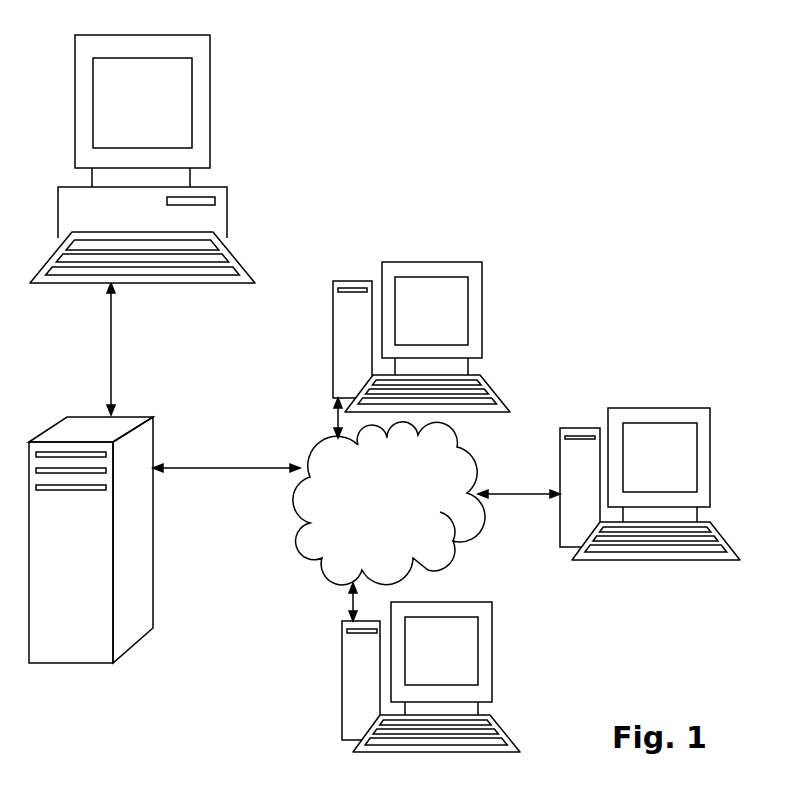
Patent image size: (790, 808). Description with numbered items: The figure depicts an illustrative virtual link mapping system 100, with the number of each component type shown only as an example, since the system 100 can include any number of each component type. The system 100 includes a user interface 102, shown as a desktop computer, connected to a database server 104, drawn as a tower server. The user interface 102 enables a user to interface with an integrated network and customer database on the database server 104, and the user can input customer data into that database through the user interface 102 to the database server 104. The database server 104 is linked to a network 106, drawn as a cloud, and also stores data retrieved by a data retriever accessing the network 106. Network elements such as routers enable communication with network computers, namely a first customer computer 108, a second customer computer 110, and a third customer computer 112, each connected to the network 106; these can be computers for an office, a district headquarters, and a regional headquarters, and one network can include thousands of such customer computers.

The virtual link mapping system 100 is at (384, 393).
The user interface 102 is at (73, 283).
The database server 104 is at (132, 655).
The network 106 is at (308, 555).
The first customer computer 108 is at (345, 310).
The second customer computer 110 is at (592, 553).
The third customer computer 112 is at (353, 660).